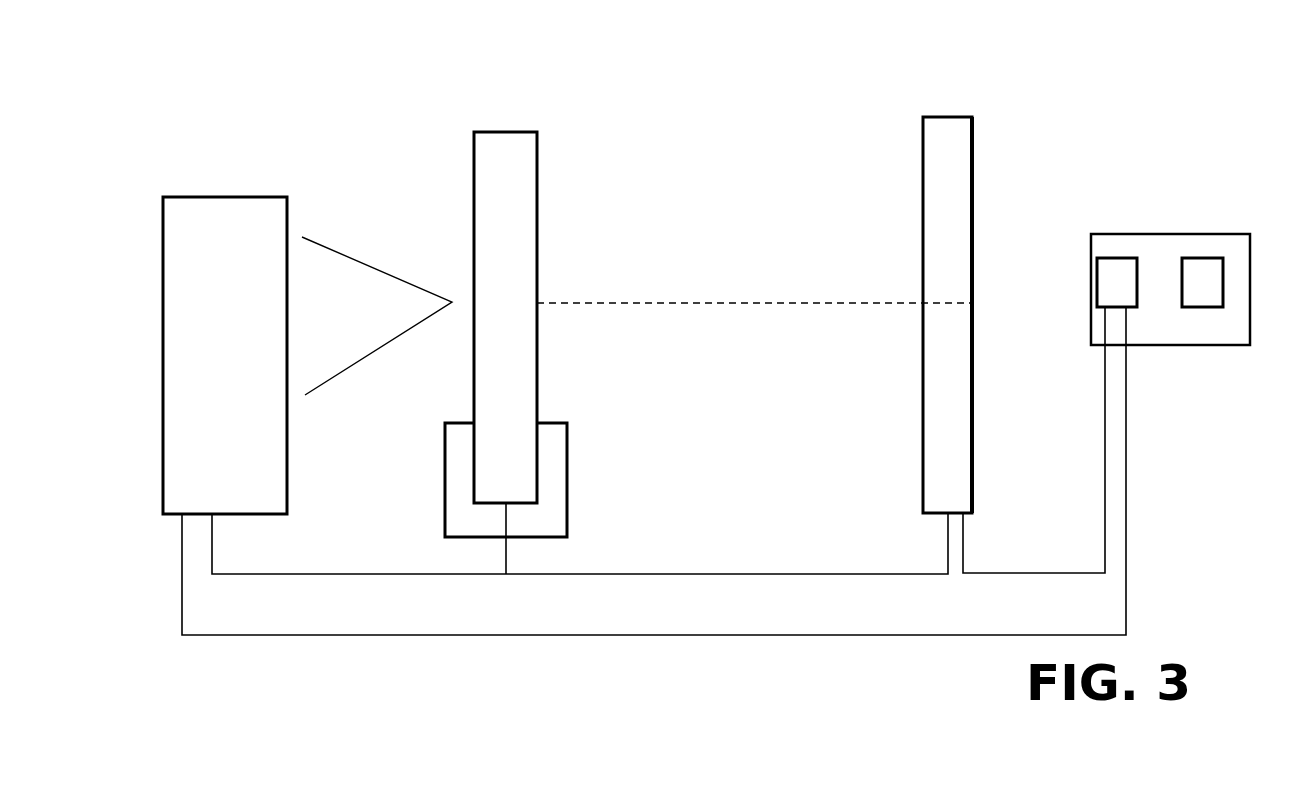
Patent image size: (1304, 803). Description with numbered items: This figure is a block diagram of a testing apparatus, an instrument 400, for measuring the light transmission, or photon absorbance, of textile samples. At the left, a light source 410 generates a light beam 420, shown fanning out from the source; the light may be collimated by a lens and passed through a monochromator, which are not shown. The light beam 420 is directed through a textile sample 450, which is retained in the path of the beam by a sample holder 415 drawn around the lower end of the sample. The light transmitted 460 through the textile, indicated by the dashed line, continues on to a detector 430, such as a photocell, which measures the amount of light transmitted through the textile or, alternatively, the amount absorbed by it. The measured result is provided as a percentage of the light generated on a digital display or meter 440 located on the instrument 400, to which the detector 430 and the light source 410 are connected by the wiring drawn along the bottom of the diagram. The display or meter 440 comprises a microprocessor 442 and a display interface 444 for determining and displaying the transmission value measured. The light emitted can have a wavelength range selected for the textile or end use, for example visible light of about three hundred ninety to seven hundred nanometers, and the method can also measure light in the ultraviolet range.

The optical system 400 is at (136, 262).
The light source 410 is at (210, 212).
The sample holder 415 is at (548, 510).
The light beam 420 is at (330, 277).
The detector 430 is at (945, 153).
The controller 440 is at (1160, 250).
The processor 442 is at (1108, 272).
The memory 444 is at (1205, 275).
The optical element 450 is at (507, 155).
The optical axis 460 is at (697, 300).